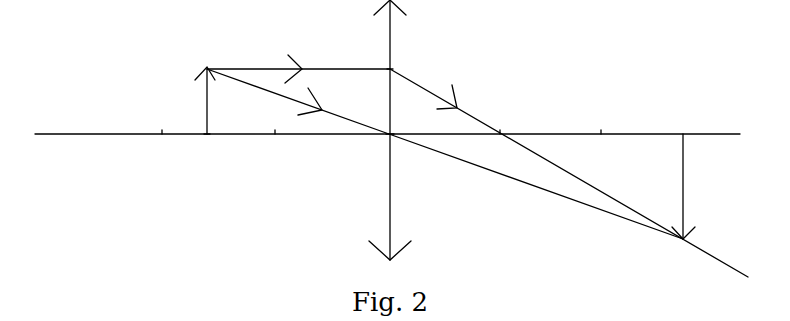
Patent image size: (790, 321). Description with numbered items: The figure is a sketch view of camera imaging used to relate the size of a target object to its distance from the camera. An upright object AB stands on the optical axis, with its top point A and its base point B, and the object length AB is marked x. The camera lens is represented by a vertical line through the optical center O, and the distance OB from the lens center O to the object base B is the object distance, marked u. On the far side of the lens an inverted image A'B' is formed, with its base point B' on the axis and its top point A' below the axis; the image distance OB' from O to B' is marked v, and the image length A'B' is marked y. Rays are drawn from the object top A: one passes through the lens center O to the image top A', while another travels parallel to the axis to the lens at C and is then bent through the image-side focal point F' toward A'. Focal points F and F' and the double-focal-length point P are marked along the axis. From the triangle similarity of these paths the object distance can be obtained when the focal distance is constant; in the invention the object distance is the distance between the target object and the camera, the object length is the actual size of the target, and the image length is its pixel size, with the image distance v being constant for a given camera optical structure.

The object top point A is at (205, 80).
The object base point B is at (207, 150).
The double focal length point (2F) on object side P is at (170, 148).
The focal point on object side F is at (271, 148).
The optical center O is at (376, 150).
The intersection point of parallel ray with lens C is at (365, 48).
The focal point on image side F' is at (494, 148).
The image base point B' is at (677, 186).
The image top point A' is at (677, 245).